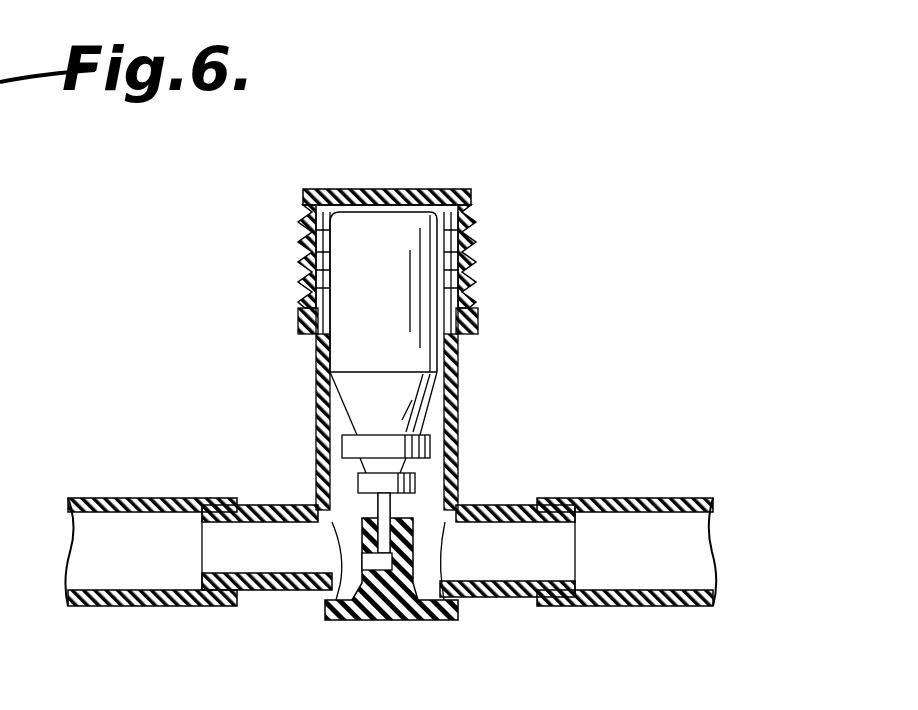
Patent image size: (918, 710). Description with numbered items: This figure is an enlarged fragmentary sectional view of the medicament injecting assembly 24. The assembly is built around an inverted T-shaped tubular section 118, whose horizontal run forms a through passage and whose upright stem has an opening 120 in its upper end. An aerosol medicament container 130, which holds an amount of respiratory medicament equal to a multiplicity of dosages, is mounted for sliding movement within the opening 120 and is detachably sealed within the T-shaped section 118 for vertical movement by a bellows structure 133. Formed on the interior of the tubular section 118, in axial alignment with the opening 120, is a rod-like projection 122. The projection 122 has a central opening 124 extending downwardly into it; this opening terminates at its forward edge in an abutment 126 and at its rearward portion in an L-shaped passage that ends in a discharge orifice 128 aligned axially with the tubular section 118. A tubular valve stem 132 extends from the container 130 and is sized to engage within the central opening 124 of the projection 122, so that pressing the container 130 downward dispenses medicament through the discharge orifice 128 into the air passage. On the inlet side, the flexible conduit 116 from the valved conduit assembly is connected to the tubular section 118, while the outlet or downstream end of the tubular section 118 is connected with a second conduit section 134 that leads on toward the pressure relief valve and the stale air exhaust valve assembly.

The medicament injecting assembly 24 is at (418, 188).
The bellows structure 133 is at (471, 199).
The aerosol medicament container 130 is at (415, 289).
The opening 120 is at (448, 352).
The tubular valve stem 132 is at (387, 508).
The rod-like projection 122 is at (345, 598).
The central opening 124 is at (378, 540).
The discharge orifice 128 is at (362, 562).
The inverted T-shaped tubular section 118 is at (290, 505).
The abutment 126 is at (412, 552).
The second conduit section 134 is at (165, 498).
The flexible conduit 116 is at (692, 480).